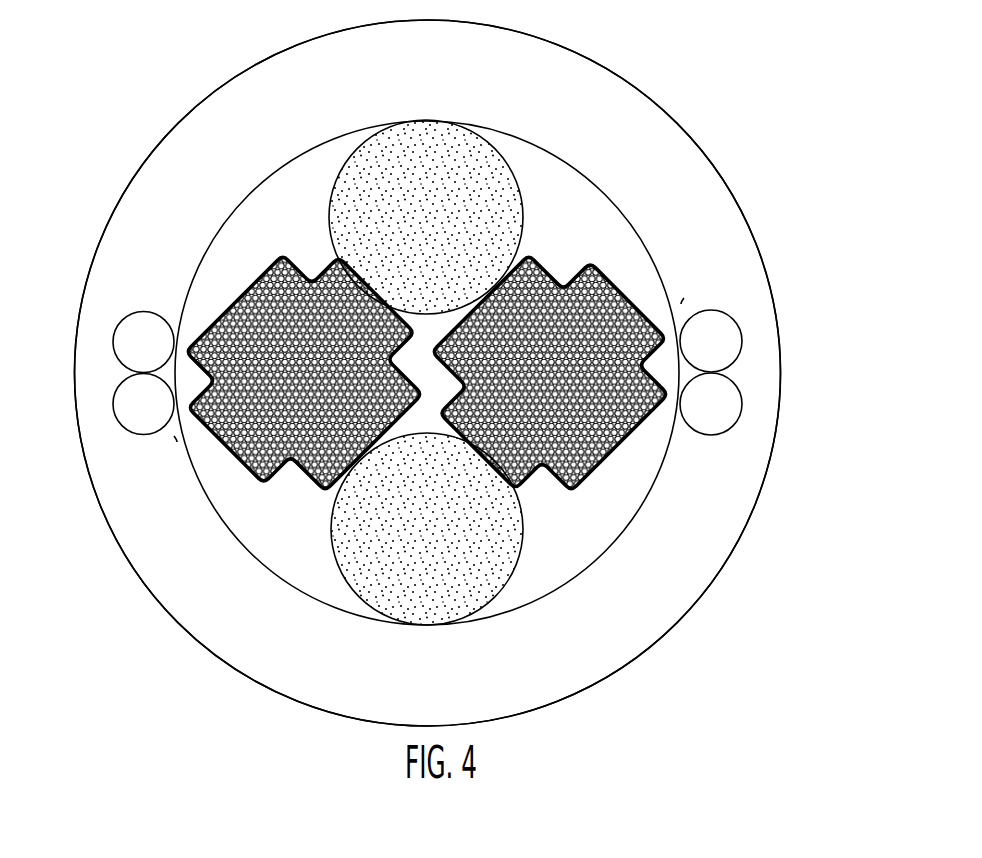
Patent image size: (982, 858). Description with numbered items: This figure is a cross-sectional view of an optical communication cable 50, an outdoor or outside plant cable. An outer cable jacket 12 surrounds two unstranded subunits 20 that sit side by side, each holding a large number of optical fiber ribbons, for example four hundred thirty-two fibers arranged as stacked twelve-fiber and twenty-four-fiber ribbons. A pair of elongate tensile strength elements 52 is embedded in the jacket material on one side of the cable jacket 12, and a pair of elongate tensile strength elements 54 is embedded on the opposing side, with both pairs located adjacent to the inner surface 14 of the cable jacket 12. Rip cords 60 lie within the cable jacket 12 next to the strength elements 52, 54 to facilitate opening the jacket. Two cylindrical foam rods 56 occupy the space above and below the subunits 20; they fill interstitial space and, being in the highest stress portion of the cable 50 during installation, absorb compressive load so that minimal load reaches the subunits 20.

The cable 50 is at (780, 150).
The cable jacket 12 is at (660, 152).
The inner surface 14 is at (208, 222).
The subunit 20 is at (220, 468).
The foam rod 56 is at (452, 138).
The elongate tensile strength element 52 is at (135, 395).
The elongate tensile strength element 54 is at (715, 340).
The rip cord 60 is at (177, 440).